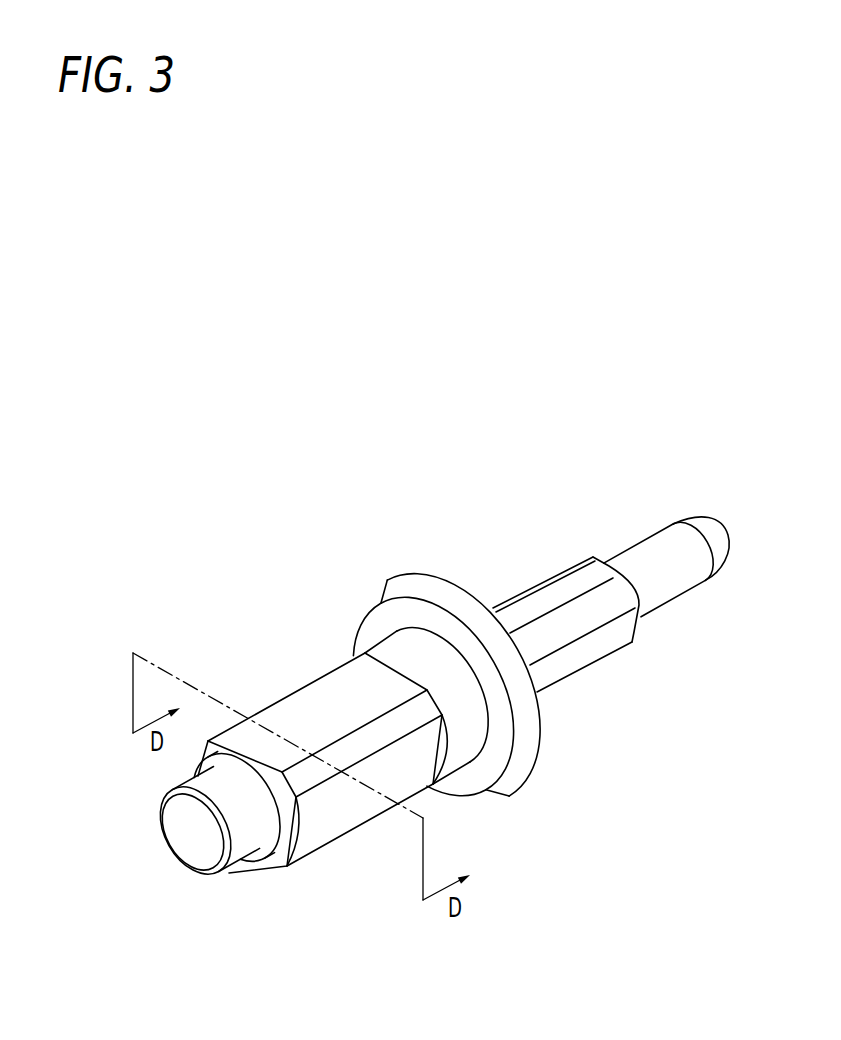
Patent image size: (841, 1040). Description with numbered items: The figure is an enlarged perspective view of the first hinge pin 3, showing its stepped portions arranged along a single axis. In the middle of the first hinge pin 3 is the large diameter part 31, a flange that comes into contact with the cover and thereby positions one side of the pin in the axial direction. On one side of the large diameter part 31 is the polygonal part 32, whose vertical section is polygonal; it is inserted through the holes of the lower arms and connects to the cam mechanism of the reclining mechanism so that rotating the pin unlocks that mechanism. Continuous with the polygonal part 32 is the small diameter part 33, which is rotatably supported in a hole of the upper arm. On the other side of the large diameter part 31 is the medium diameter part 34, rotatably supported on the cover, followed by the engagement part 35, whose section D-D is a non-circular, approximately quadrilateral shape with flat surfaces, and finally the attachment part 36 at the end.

The first hinge pin 3 is at (411, 438).
The large diameter part 31 is at (413, 580).
The polygonal part 32 is at (545, 597).
The small diameter part 33 is at (663, 540).
The medium diameter part 34 is at (418, 642).
The engagement part 35 is at (320, 706).
The attachment part 36 is at (240, 840).